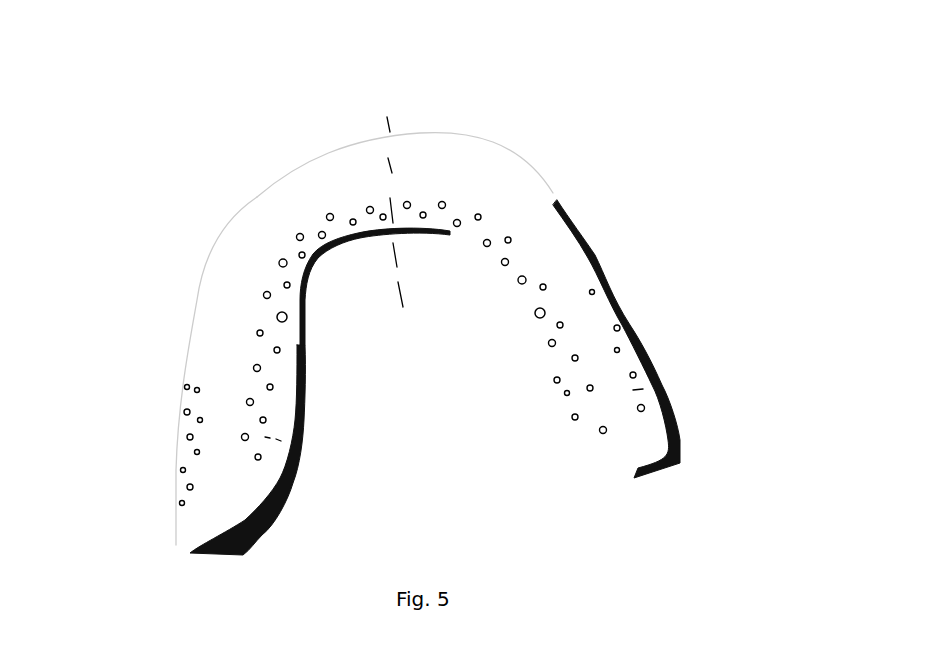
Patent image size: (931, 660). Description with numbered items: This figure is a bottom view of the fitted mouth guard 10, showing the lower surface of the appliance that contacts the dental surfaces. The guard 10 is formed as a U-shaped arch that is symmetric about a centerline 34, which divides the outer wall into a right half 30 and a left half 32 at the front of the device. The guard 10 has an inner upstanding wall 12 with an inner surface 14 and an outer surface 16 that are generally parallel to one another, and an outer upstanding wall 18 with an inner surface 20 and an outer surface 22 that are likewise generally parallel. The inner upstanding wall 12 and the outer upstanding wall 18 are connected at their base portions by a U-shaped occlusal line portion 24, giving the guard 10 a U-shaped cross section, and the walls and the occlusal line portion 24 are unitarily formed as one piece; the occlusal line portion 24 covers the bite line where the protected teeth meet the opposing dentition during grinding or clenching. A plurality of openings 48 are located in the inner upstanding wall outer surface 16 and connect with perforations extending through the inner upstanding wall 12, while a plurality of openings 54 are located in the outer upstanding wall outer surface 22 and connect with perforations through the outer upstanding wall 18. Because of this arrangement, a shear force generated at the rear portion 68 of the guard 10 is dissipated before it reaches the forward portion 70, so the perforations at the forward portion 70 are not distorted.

The mouth guard 10 is at (257, 197).
The inner upstanding wall 12 is at (263, 490).
The inner surface 14 is at (293, 450).
The outer surface 16 is at (233, 513).
The outer upstanding wall 18 is at (633, 350).
The inner surface 20 is at (678, 385).
The outer surface 22 is at (600, 312).
The U-shaped occlusal line portion 24 is at (630, 447).
The right half 30 is at (562, 193).
The left half 32 is at (222, 243).
The centerline 34 is at (385, 85).
The openings 48 is at (286, 320).
The openings 54 is at (190, 437).
The rear portion 68 is at (150, 387).
The forward portion 70 is at (507, 150).